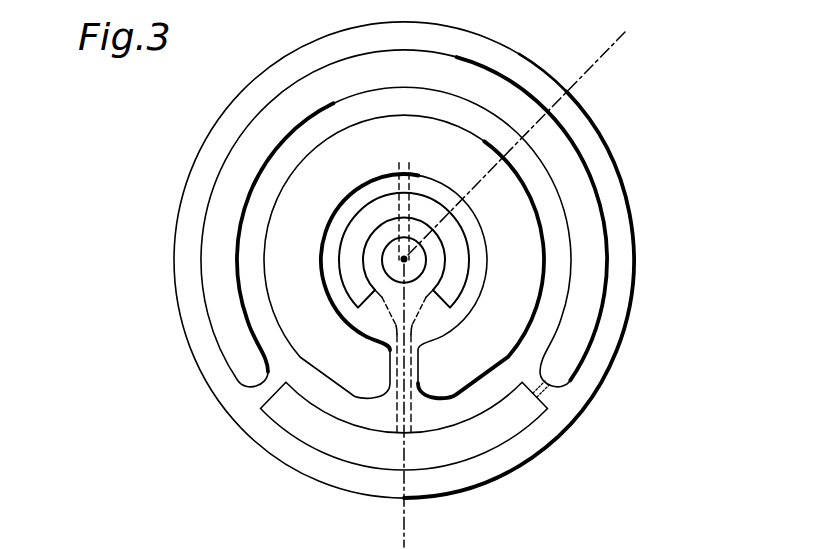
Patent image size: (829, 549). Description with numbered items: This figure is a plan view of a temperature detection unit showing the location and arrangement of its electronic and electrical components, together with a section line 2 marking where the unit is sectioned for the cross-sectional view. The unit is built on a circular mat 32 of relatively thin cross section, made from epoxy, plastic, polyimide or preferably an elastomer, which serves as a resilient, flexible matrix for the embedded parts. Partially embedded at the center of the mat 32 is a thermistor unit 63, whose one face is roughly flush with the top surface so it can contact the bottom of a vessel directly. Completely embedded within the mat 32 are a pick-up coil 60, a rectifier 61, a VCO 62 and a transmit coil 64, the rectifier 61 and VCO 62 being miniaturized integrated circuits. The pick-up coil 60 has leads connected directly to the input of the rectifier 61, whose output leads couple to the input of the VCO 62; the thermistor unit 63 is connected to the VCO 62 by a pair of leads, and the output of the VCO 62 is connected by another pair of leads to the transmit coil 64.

The section line 2—2' 2 is at (600, 57).
The circular mat 32 is at (565, 407).
The pick-up coil 60 is at (572, 342).
The rectifier 61 is at (468, 443).
The VCO 62 is at (455, 247).
The thermistor unit 63 is at (404, 259).
The transmit coil 64 is at (528, 270).